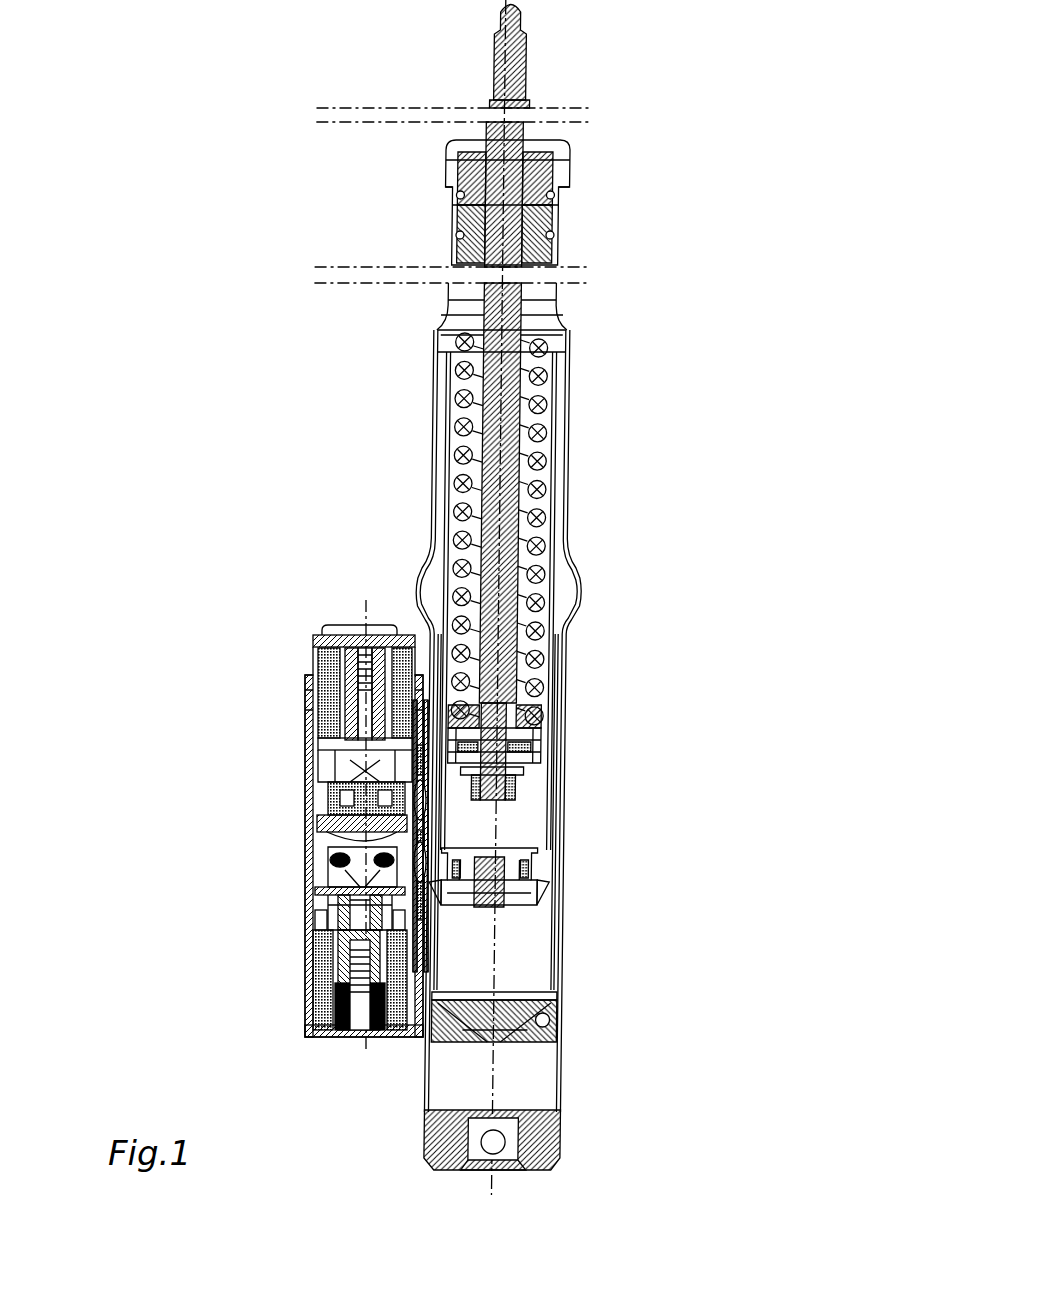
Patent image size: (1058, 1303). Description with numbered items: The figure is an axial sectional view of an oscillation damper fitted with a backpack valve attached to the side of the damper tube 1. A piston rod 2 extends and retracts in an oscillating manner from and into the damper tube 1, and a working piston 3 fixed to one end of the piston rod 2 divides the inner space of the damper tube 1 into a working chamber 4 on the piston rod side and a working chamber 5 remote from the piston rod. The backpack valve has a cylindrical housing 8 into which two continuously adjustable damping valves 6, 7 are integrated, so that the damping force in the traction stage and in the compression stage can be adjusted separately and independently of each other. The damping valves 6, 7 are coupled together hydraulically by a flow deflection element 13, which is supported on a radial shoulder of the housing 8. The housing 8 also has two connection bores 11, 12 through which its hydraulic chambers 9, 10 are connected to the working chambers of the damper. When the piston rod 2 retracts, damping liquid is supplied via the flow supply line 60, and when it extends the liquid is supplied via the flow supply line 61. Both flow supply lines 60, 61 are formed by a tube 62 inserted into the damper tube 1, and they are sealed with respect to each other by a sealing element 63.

The damper tube 1 is at (570, 412).
The piston rod 2 is at (517, 232).
The working piston 3 is at (548, 752).
The working chamber 4 is at (548, 632).
The working chamber 5 is at (525, 817).
The damping valve 6 is at (318, 751).
The damping valve 7 is at (405, 910).
The housing 8 is at (303, 890).
The hydraulic chamber 9 is at (402, 911).
The hydraulic chamber 10 is at (330, 766).
The connection bore 11 is at (548, 884).
The connection bore 12 is at (445, 810).
The flow deflection element 13 is at (305, 832).
The flow supply line 60 is at (435, 880).
The flow supply line 61 is at (440, 643).
The tube 62 is at (448, 463).
The sealing element 63 is at (563, 828).